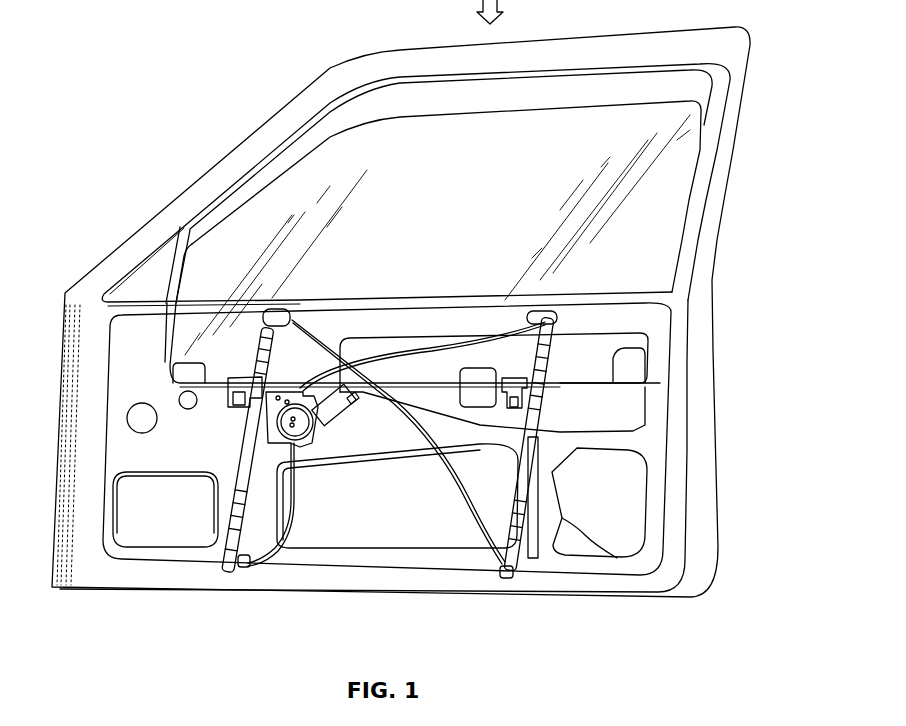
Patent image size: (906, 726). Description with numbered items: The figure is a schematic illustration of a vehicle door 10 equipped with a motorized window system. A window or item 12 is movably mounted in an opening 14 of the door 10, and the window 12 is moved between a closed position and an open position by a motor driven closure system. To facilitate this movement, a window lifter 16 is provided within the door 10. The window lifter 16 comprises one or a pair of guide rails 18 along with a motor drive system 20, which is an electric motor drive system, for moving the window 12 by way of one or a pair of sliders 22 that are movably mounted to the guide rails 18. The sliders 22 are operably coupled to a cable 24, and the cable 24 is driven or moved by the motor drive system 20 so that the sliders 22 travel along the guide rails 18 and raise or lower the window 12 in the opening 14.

The vehicle door 10 is at (713, 313).
The window or item 12 is at (667, 197).
The opening 14 is at (588, 75).
The window lifter 16 is at (208, 558).
The guide rails 18 is at (215, 525).
The motor drive system 20 is at (313, 445).
The sliders 22 is at (225, 403).
The cable 24 is at (525, 314).